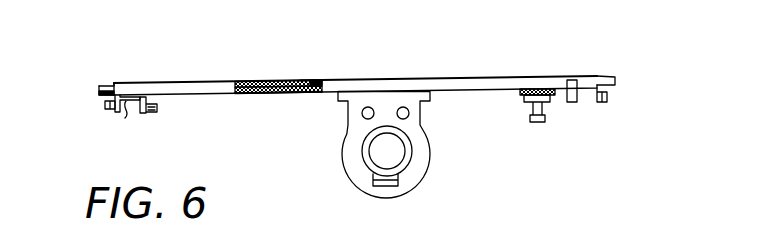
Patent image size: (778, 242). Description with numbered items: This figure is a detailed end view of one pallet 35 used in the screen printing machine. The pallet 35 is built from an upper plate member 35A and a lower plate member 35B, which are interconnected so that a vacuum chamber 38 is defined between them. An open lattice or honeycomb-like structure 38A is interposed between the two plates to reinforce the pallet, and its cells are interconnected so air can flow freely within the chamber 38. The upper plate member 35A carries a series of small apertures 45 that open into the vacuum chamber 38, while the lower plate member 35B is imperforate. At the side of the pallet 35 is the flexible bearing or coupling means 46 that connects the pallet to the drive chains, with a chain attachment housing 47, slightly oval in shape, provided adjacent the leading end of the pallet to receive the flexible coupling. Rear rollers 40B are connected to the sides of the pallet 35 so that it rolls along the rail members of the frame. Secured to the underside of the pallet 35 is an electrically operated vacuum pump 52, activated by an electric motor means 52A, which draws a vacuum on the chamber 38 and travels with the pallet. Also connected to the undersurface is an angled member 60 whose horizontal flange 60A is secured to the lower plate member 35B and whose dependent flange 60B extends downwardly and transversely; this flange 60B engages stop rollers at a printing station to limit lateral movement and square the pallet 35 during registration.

The pallet 35 is at (349, 80).
The upper plate member 35A is at (259, 81).
The lower plate member 35B is at (273, 95).
The vacuum chamber 38 is at (292, 93).
The honeycomb-like structure 38A is at (309, 80).
The apertures 45 is at (312, 82).
The flexible bearing or coupling means 46 is at (109, 84).
The chain attachment housing 47 is at (99, 92).
The rear rollers 40B is at (106, 107).
The vacuum pump 52 is at (417, 186).
The electric motor means 52A is at (370, 155).
The angled member 60 is at (128, 99).
The horizontal flange 60A is at (125, 118).
The dependent flange 60B is at (137, 106).